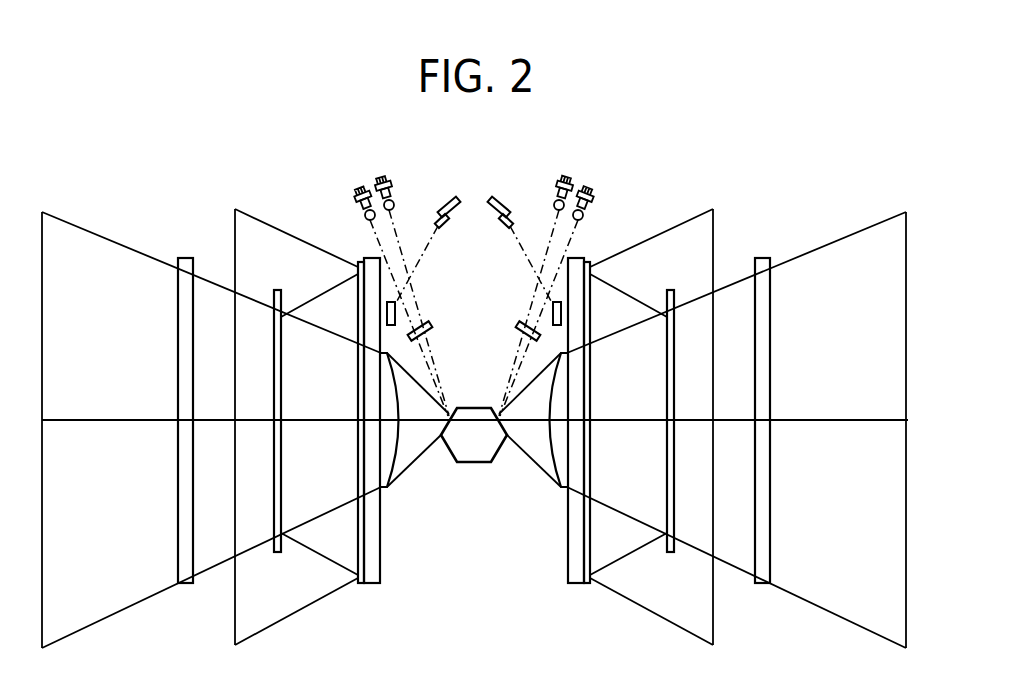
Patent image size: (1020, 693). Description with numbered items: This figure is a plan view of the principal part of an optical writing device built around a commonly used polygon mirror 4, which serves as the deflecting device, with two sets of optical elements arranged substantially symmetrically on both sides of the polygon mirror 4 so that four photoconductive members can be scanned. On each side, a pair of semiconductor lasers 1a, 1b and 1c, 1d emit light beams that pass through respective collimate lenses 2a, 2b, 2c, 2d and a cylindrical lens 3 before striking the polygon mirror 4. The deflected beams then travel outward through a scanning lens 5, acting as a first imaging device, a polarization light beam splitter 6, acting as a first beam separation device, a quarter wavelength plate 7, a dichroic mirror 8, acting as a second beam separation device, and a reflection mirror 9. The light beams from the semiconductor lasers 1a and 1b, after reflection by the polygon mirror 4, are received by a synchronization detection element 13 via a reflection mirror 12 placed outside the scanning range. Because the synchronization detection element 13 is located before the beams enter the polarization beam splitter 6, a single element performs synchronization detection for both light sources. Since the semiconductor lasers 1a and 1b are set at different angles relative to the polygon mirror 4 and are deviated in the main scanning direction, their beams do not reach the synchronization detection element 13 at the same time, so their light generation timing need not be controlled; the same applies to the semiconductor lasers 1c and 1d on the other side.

The semiconductor laser 1a is at (392, 184).
The semiconductor laser 1b is at (356, 195).
The semiconductor laser 1c is at (556, 184).
The semiconductor laser 1d is at (592, 195).
The collimate lens 2a is at (394, 205).
The collimate lens 2b is at (365, 215).
The collimate lens 2c is at (554, 205).
The collimate lens 2d is at (583, 215).
The cylindrical lens 3 is at (428, 326).
The polygon mirror 4 is at (478, 463).
The scanning lens 5 is at (389, 488).
The polarization light beam splitter 6 is at (380, 558).
The quarter wavelength plate 7 is at (361, 584).
The dichroic mirror 8 is at (278, 553).
The reflection mirror 9 is at (186, 584).
The reflection mirror 12 is at (387, 316).
The synchronization detection element 13 is at (442, 197).